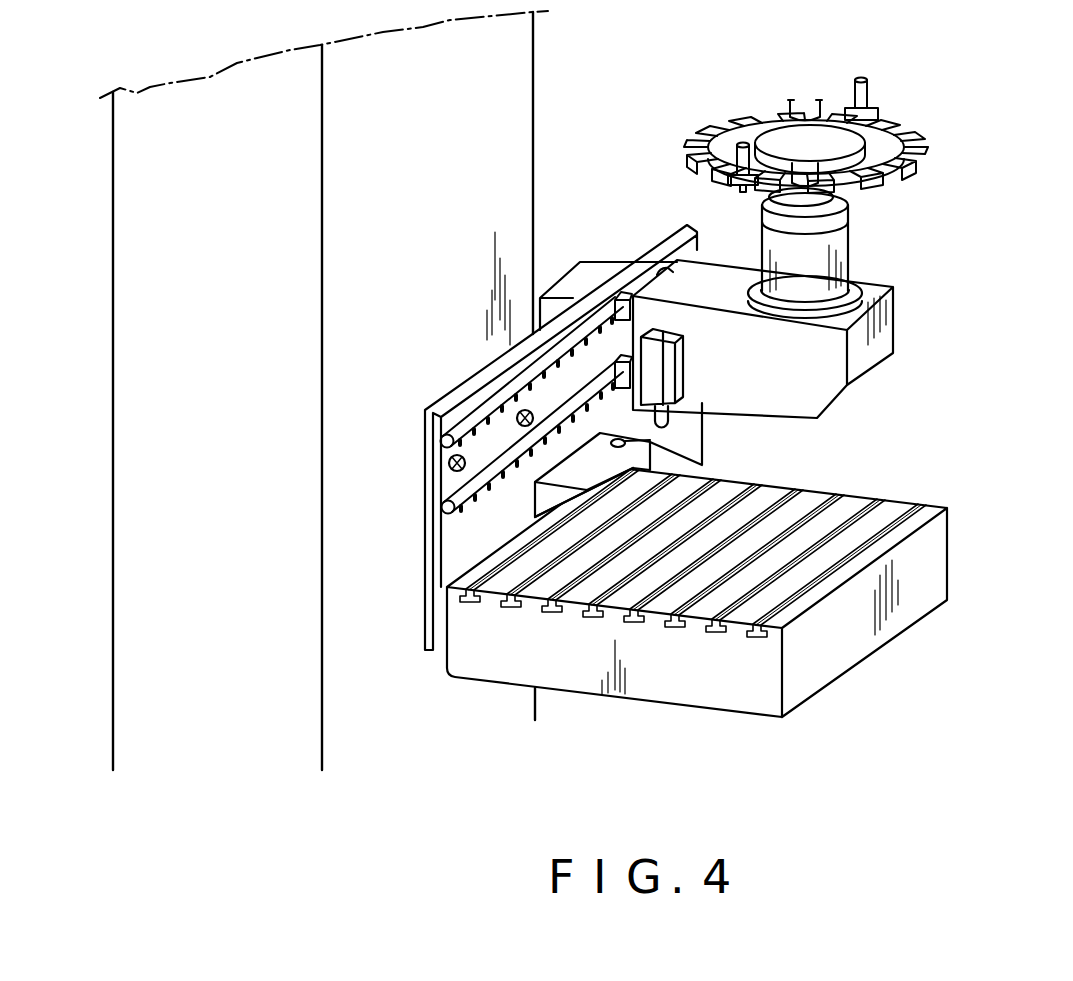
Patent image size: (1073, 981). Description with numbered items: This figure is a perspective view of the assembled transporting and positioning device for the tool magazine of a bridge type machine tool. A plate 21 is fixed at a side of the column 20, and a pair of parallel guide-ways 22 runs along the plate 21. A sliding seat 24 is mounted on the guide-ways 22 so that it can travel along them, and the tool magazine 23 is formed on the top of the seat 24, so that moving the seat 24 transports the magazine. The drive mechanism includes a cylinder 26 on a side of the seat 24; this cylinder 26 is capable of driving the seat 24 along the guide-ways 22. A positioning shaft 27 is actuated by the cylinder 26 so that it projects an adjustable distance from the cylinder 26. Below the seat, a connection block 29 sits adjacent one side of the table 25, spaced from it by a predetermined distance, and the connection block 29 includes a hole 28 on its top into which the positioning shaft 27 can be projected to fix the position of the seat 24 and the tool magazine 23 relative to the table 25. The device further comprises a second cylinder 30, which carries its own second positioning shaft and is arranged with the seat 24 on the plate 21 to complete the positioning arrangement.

The column 20 is at (512, 98).
The plate 21 is at (680, 257).
The guide-ways 22 is at (580, 333).
The tool magazine 23 is at (937, 137).
The sliding seat 24 is at (810, 383).
The table 25 is at (930, 562).
The cylinder 26 is at (670, 369).
The positioning shaft 27 is at (670, 418).
The hole 28 is at (702, 465).
The connection block 29 is at (553, 498).
The second cylinder 30 is at (605, 277).